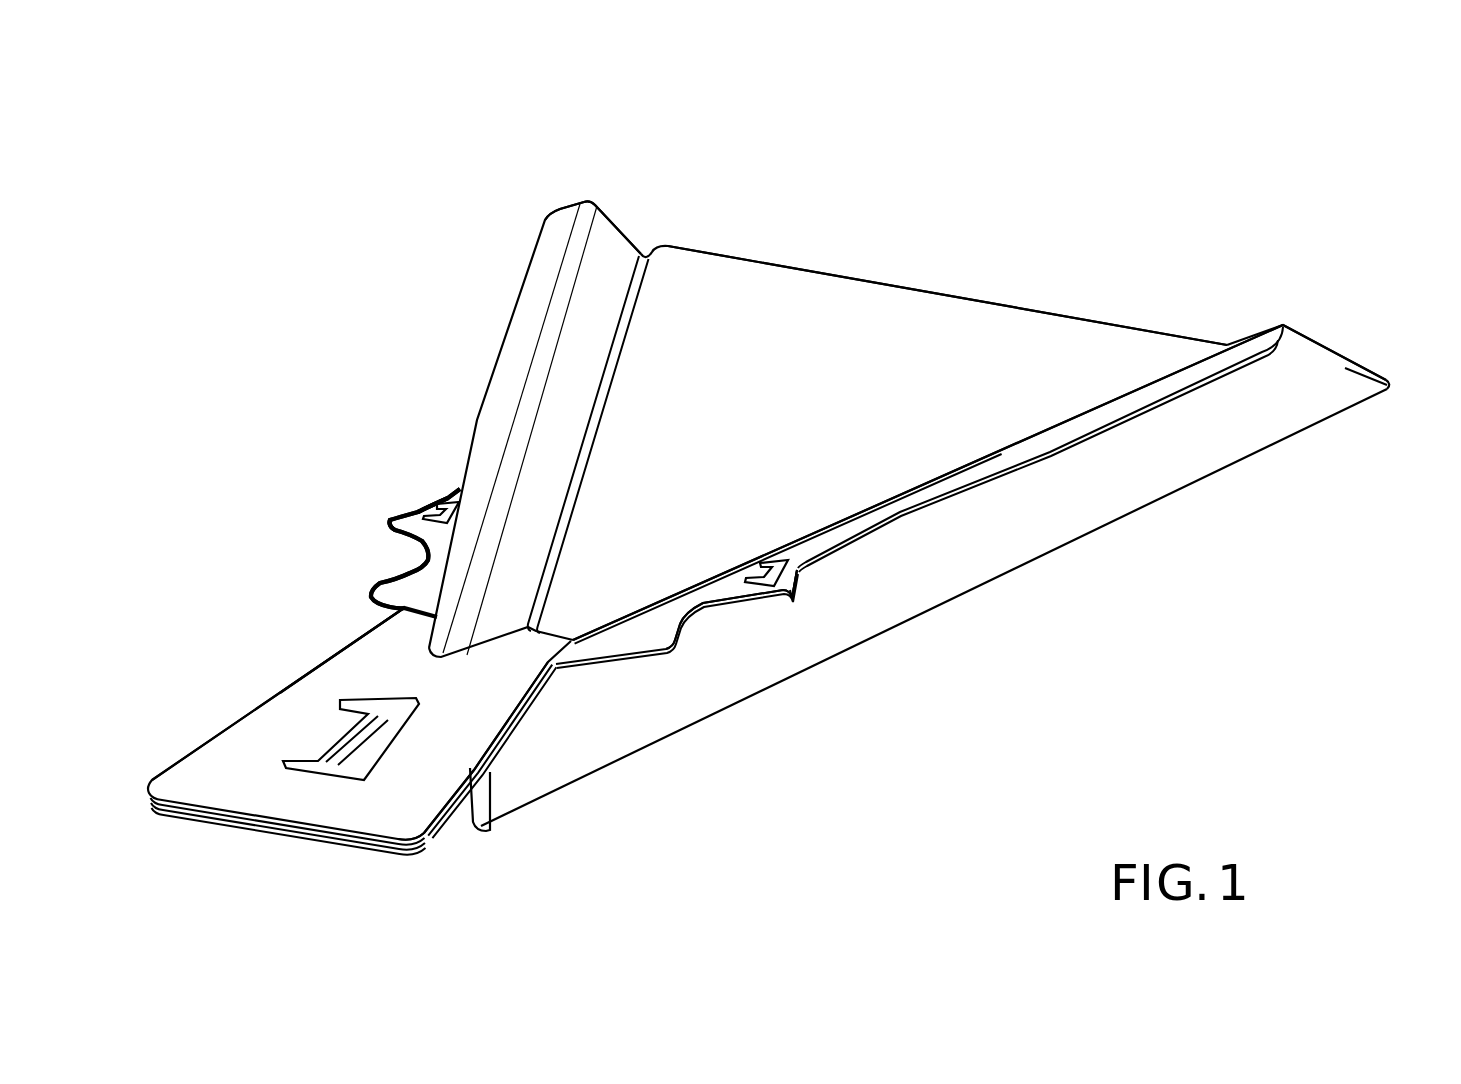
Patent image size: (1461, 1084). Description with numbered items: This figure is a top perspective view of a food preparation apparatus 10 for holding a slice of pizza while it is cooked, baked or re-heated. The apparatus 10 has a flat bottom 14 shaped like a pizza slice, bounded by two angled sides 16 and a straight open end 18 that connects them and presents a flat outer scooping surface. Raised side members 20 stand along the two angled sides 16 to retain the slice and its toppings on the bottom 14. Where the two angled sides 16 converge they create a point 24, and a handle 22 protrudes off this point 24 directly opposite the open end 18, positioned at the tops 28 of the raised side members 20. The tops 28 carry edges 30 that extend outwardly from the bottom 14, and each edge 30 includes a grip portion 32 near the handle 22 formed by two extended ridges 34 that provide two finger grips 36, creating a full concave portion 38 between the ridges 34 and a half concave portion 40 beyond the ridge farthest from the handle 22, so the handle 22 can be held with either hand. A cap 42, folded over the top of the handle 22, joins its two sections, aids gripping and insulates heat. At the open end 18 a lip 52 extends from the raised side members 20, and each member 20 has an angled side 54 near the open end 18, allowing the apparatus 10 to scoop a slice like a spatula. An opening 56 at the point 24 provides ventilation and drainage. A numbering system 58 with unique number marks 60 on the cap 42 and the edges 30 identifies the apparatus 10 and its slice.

The food preparation apparatus 10 is at (326, 200).
The flat bottom 14 is at (792, 426).
The angled sides 16 is at (582, 498).
The open end 18 is at (973, 292).
The raised side members 20 is at (575, 395).
The handle 22 is at (252, 665).
The point 24 is at (445, 840).
The tops 28 is at (592, 192).
The edges 30 is at (537, 279).
The grip portions 32 is at (368, 513).
The extended ridges 34 is at (390, 518).
The finger grips 36 is at (404, 480).
The full concave portion 38 is at (418, 553).
The half concave portion 40 is at (437, 497).
The cap 42 is at (218, 757).
The lip 52 is at (1390, 380).
The angled side 54 is at (617, 230).
The opening 56 is at (488, 831).
The numbering system 58 is at (268, 625).
The unique number mark 60 is at (462, 510).